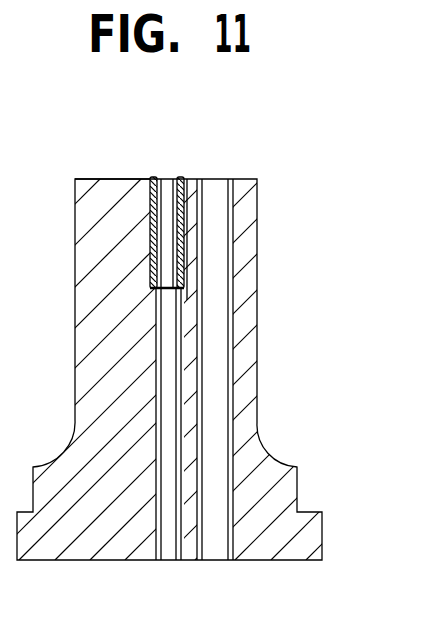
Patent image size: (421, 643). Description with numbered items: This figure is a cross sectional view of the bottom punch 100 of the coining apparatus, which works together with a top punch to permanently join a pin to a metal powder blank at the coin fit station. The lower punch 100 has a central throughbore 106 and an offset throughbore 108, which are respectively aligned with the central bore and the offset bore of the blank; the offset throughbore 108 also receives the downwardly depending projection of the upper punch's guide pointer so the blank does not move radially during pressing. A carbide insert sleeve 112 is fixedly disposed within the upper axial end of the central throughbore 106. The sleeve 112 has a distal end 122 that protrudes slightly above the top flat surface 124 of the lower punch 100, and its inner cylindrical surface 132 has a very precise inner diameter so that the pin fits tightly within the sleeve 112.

The bottom punch 100 is at (92, 394).
The central throughbore 106 is at (163, 300).
The offset throughbore 108 is at (233, 413).
The carbide insert sleeve 112 is at (211, 191).
The distal end 122 is at (157, 178).
The top flat surface 124 is at (86, 179).
The inner cylindrical surface 132 is at (177, 280).